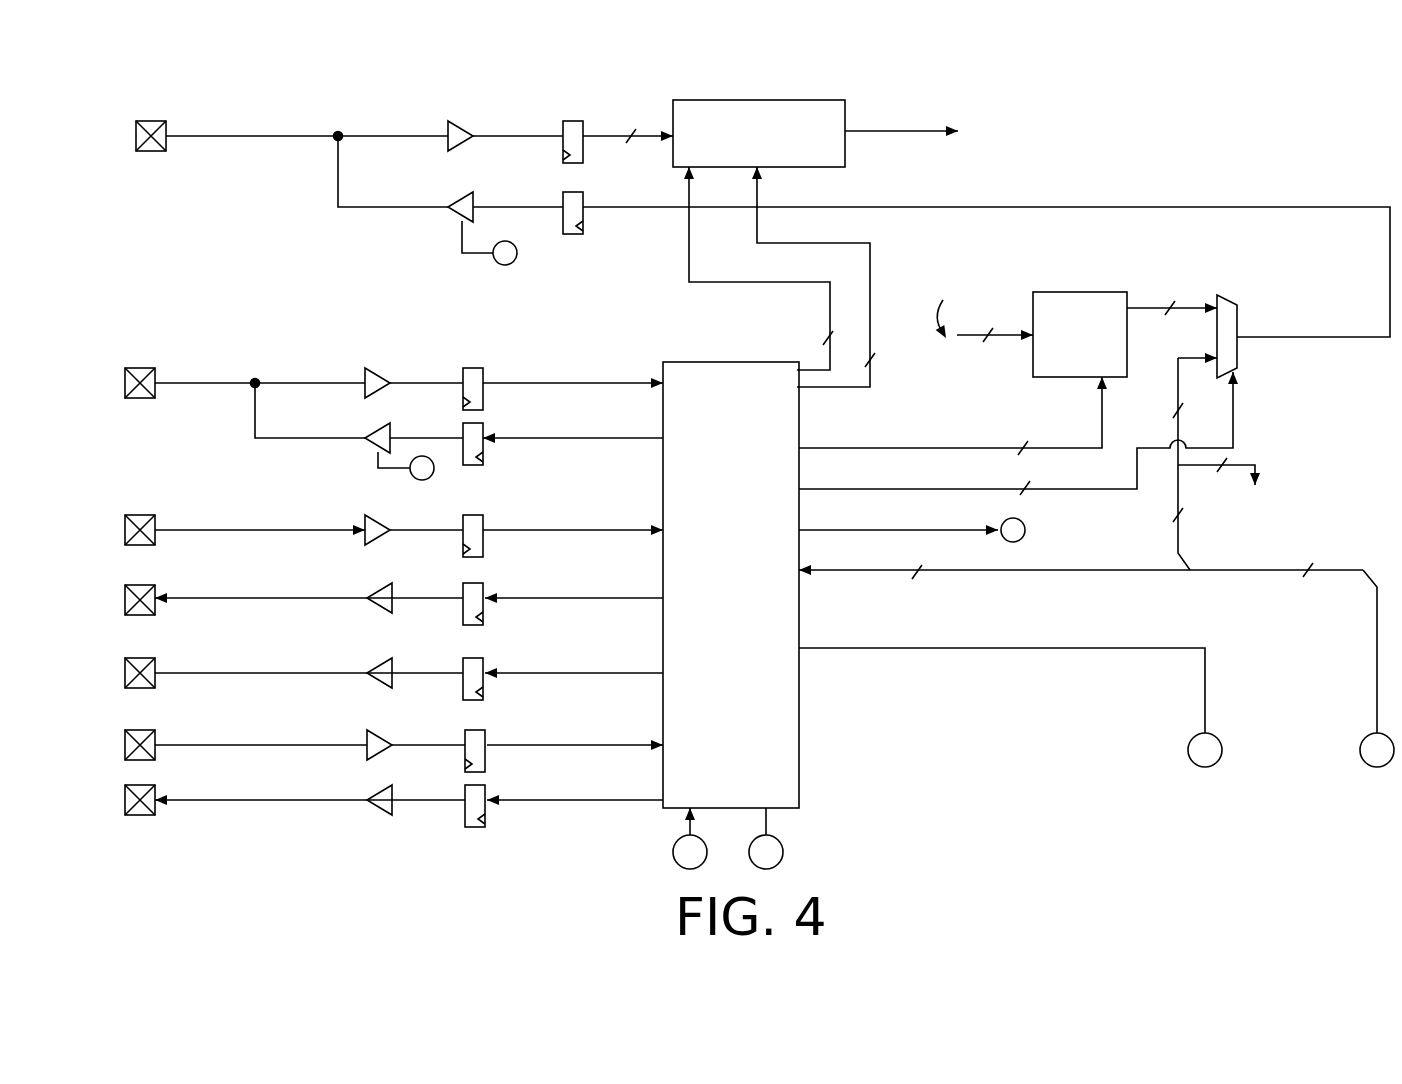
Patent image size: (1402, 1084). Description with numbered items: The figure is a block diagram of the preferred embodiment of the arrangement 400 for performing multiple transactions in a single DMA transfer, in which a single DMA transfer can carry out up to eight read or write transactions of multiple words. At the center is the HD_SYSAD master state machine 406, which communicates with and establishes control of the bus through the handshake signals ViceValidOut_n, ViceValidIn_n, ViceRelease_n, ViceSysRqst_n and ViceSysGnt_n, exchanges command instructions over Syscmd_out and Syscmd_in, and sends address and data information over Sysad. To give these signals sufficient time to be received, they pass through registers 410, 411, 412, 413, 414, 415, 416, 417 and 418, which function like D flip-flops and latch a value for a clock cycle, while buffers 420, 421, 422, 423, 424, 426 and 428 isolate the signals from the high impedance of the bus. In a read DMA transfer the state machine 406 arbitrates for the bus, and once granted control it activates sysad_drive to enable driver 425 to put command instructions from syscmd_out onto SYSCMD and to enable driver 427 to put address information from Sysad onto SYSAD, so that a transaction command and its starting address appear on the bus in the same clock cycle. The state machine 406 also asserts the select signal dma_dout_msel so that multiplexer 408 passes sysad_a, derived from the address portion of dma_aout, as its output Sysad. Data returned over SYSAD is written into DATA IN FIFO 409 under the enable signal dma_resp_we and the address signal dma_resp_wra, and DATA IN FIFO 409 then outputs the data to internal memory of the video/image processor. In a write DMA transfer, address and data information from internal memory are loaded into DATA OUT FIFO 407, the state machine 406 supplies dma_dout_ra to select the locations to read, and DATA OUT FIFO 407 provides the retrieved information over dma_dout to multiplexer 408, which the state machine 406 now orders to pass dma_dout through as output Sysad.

The arrangement 400 is at (131, 92).
The HD_SYSAD master state machine 406 is at (731, 585).
The DATA OUT FIFO 407 is at (1080, 334).
The multiplexer 408 is at (1238, 349).
The DATA IN FIFO 409 is at (845, 112).
The register 410 is at (467, 824).
The register 411 is at (466, 730).
The register 412 is at (464, 658).
The register 413 is at (464, 583).
The register 414 is at (464, 515).
The register 415 is at (485, 455).
The register 416 is at (464, 368).
The register 417 is at (583, 196).
The register 418 is at (564, 121).
The buffer 420 is at (385, 814).
The buffer 421 is at (368, 730).
The buffer 422 is at (391, 658).
The buffer 423 is at (391, 583).
The buffer 424 is at (366, 515).
The driver 425 is at (390, 428).
The buffer 426 is at (366, 368).
The driver 427 is at (472, 196).
The buffer 428 is at (449, 121).